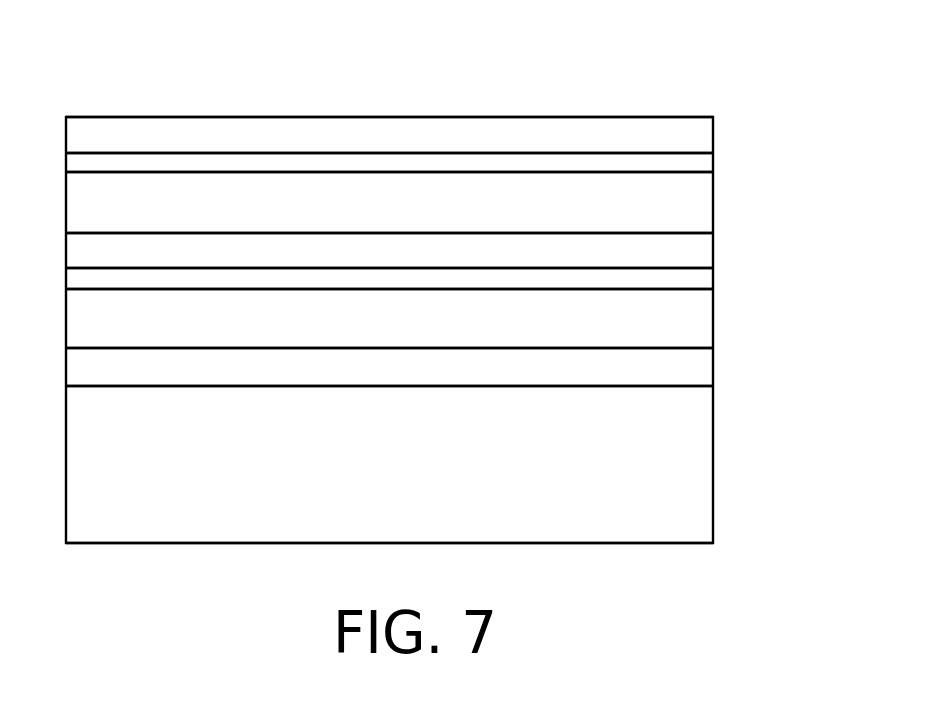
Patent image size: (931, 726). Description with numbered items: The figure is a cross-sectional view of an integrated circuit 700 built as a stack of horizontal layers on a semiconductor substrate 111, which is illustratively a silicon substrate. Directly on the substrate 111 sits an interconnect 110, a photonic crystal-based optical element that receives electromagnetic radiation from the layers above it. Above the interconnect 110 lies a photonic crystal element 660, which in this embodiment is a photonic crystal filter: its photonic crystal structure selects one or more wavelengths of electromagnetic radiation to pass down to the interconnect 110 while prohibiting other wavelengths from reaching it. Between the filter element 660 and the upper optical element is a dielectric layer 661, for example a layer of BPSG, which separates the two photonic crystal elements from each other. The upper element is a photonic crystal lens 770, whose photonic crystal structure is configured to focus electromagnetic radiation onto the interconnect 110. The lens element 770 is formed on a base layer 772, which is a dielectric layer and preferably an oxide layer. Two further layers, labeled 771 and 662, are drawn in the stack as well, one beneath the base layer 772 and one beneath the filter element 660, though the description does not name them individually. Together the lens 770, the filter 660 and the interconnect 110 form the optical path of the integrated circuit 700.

The integrated circuit 700 is at (700, 101).
The photonic crystal lens 770 is at (536, 127).
The base layer 772 is at (700, 159).
The layer 771 is at (656, 221).
The photonic crystal filter 660 is at (700, 248).
The layer 662 is at (700, 279).
The dielectric layer 661 is at (656, 333).
The interconnect 110 is at (700, 371).
The semiconductor substrate 111 is at (656, 497).